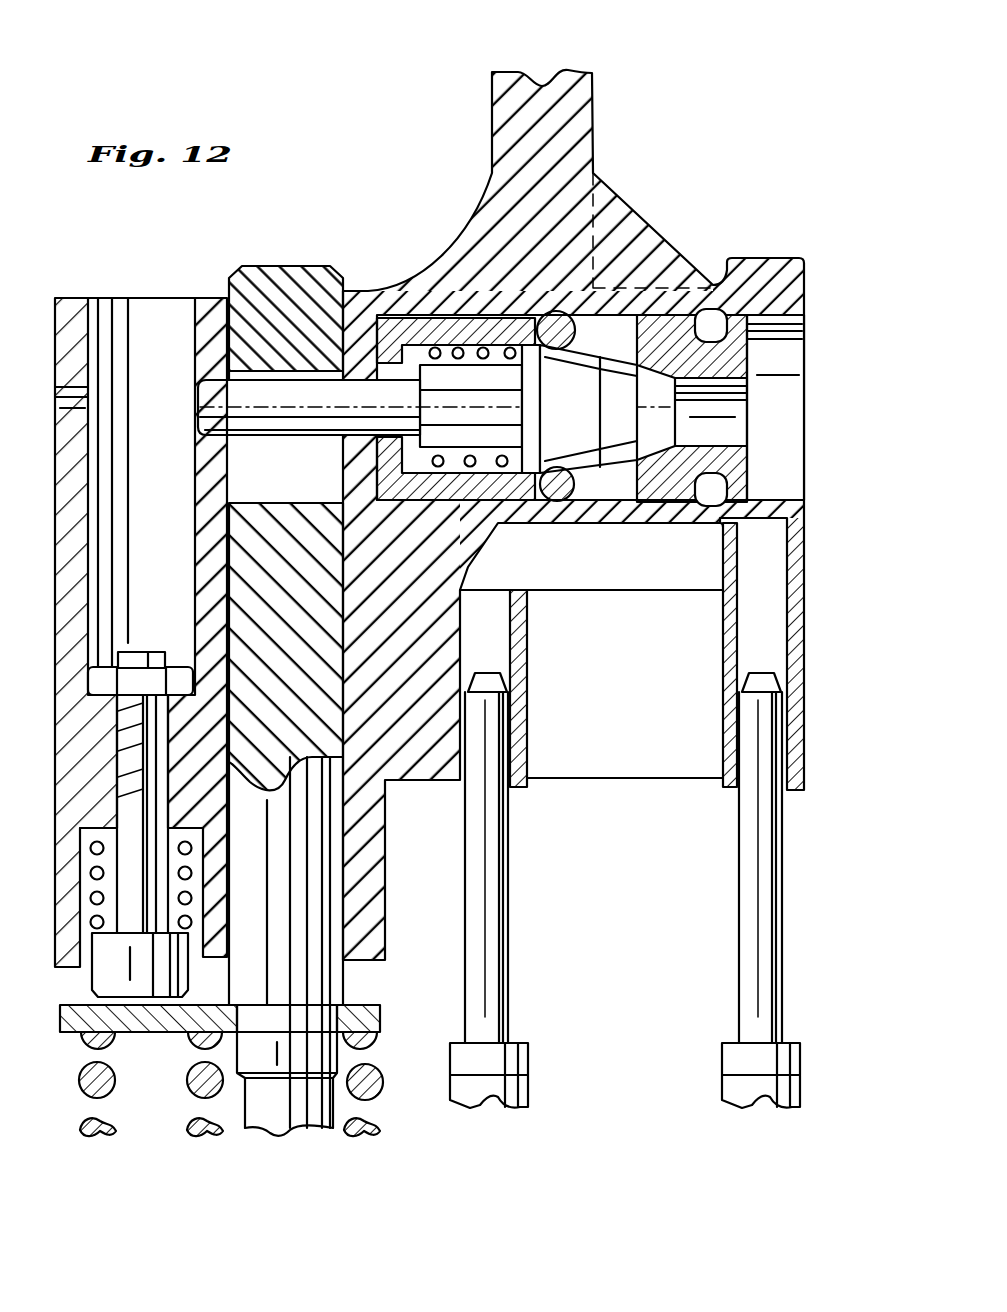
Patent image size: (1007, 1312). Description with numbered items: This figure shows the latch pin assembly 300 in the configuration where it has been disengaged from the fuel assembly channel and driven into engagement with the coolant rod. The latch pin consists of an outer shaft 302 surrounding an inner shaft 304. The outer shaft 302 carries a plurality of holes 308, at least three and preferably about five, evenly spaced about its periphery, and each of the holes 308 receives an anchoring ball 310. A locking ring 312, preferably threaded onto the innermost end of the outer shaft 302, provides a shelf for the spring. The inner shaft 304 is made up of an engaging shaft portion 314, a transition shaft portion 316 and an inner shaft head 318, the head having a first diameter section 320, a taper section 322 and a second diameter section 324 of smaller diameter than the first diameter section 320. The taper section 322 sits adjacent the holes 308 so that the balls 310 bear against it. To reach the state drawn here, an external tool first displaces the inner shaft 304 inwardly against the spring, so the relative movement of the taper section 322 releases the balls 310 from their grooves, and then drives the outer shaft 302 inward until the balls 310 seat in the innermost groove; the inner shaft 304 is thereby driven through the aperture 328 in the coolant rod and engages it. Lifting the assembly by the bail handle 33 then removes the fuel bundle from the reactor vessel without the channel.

The bail handle 33 is at (585, 72).
The latch pin assembly 300 is at (779, 153).
The outer shaft 302 is at (800, 312).
The inner shaft 304 is at (213, 405).
The holes 308 is at (598, 345).
The ball 310 is at (553, 318).
The locking ring 312 is at (372, 298).
The engaging shaft portion 314 is at (205, 378).
The transition shaft portion 316 is at (442, 380).
The inner shaft head 318 is at (527, 395).
The first diameter section 320 is at (530, 500).
The taper section 322 is at (558, 500).
The second diameter section 324 is at (633, 523).
The aperture 328 is at (306, 368).